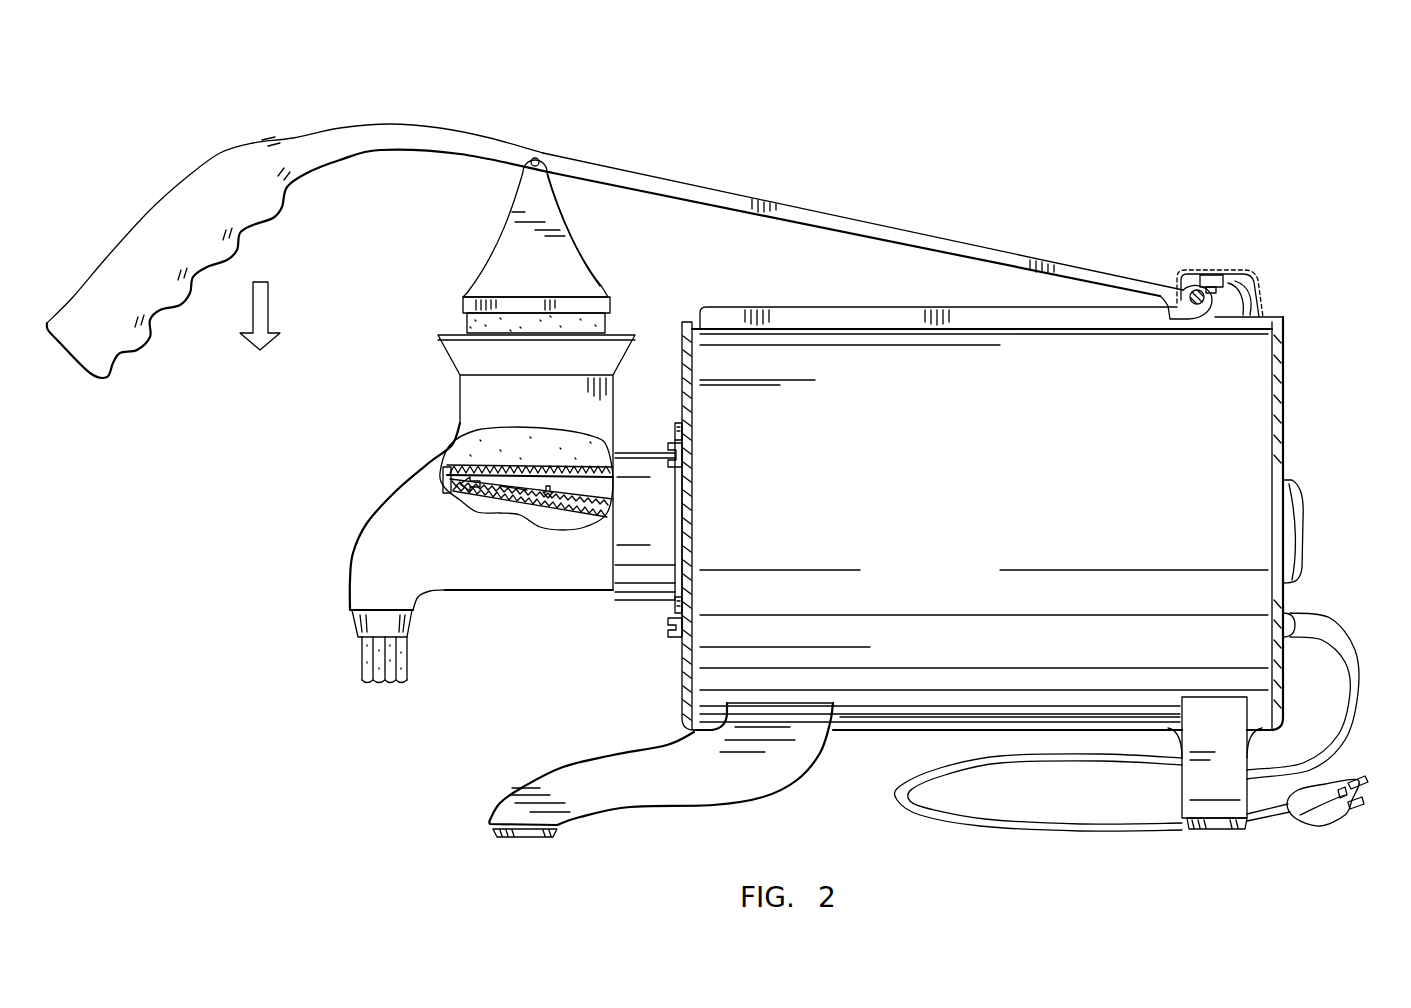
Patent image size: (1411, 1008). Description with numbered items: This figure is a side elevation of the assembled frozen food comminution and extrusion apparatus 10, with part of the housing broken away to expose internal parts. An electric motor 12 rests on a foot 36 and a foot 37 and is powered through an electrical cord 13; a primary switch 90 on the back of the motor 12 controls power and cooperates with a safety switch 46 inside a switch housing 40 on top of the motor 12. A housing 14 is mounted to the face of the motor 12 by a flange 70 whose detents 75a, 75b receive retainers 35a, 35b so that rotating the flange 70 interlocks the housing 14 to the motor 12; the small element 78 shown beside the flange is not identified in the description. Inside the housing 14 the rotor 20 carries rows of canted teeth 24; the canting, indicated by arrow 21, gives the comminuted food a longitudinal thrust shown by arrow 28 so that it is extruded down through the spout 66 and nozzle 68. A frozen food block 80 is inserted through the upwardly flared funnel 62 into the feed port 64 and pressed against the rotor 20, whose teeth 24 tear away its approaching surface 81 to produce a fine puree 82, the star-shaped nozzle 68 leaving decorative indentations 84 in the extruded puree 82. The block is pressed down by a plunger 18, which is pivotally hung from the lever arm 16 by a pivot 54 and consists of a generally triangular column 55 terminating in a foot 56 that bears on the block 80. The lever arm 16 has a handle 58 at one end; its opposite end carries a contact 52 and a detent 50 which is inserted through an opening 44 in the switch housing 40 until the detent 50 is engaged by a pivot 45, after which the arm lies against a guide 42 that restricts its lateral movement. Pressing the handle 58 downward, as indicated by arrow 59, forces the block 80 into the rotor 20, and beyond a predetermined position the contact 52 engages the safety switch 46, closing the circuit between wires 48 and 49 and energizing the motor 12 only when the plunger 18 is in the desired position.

The frozen food comminution apparatus 10 is at (893, 178).
The electric motor 12 is at (1178, 472).
The electrical cord 13 is at (1352, 667).
The housing 14 is at (542, 577).
The lever arm 16 is at (634, 184).
The plunger 18 is at (488, 258).
The rotor 20 is at (513, 487).
The arrow 21 is at (560, 500).
The teeth 24 is at (527, 490).
The arrow 28 is at (485, 497).
The retainer 35a is at (683, 451).
The retainer 35b is at (700, 653).
The foot 36 is at (675, 773).
The foot 37 is at (1182, 753).
The switch housing 40 is at (1193, 290).
The guide 42 is at (885, 320).
The opening 44 is at (1172, 292).
The pivot 45 is at (1210, 287).
The safety switch 46 is at (1214, 274).
The wire 48 is at (1248, 283).
The wire 49 is at (1246, 302).
The detent 50 is at (1198, 329).
The contact 52 is at (1262, 317).
The pivot 54 is at (541, 159).
The column 55 is at (563, 268).
The foot 56 is at (575, 303).
The handle 58 is at (160, 233).
The arrow 59 is at (260, 330).
The funnel 62 is at (467, 352).
The feed port 64 is at (460, 414).
The spout 66 is at (350, 554).
The nozzle 68 is at (355, 648).
The flange 70 is at (680, 516).
The detent 75a is at (683, 429).
The detent 75b is at (683, 606).
The coupling 78 is at (634, 454).
The frozen food block 80 is at (573, 322).
The surface 81 is at (447, 478).
The puree 82 is at (410, 656).
The indentations 84 is at (388, 684).
The primary switch 90 is at (1300, 517).